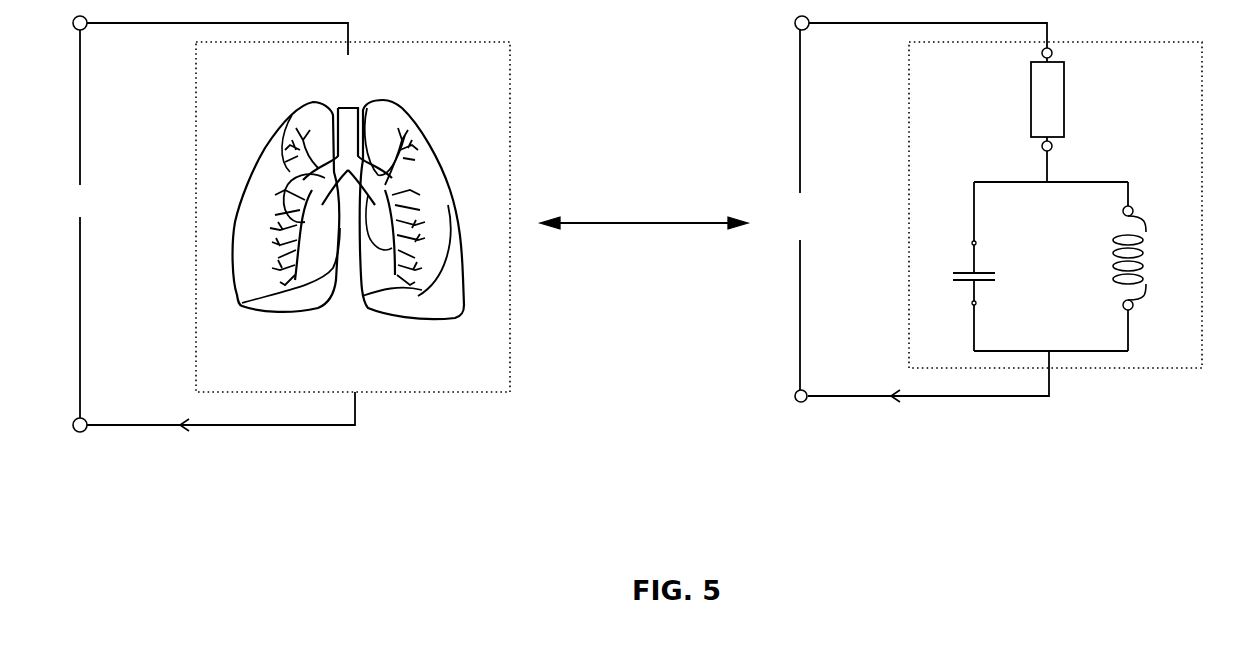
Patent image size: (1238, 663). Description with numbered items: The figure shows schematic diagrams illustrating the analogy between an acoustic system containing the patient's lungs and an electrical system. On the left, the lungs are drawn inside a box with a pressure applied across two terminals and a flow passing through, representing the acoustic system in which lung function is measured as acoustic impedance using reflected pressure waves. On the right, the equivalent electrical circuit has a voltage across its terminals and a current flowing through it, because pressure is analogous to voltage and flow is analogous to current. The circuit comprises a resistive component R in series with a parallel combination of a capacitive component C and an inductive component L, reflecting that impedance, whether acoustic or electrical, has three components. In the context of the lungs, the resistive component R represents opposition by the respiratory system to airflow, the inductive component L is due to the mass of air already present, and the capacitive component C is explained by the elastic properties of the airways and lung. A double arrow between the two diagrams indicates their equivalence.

The resistive component R is at (1056, 115).
The capacitive component C is at (982, 266).
The inductive component L is at (1137, 266).
The element lungs is at (275, 265).